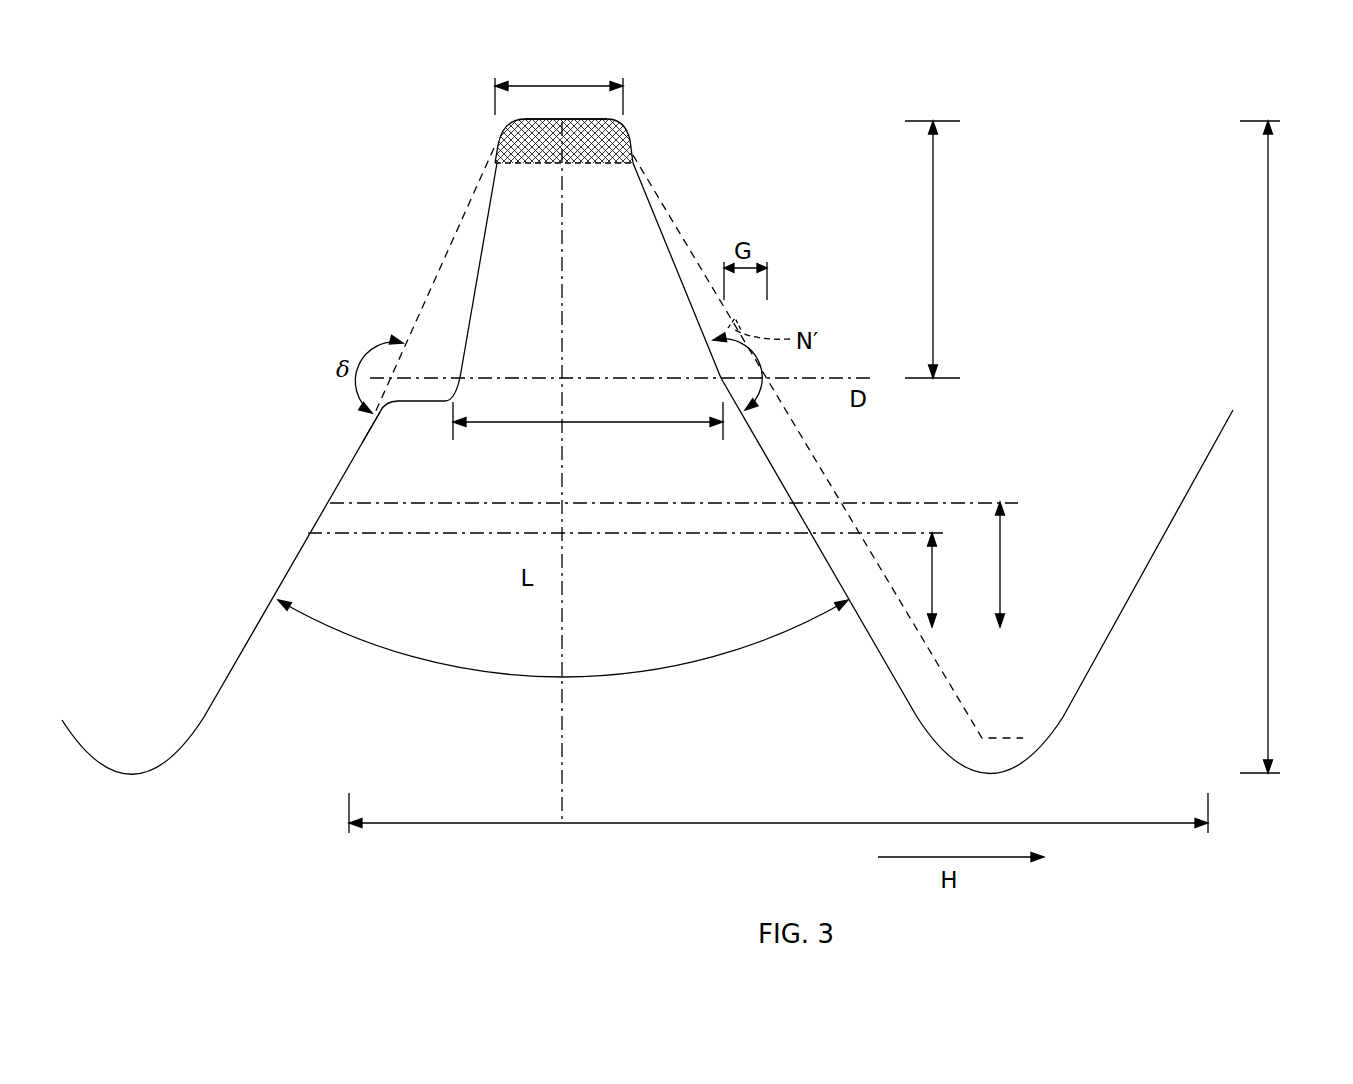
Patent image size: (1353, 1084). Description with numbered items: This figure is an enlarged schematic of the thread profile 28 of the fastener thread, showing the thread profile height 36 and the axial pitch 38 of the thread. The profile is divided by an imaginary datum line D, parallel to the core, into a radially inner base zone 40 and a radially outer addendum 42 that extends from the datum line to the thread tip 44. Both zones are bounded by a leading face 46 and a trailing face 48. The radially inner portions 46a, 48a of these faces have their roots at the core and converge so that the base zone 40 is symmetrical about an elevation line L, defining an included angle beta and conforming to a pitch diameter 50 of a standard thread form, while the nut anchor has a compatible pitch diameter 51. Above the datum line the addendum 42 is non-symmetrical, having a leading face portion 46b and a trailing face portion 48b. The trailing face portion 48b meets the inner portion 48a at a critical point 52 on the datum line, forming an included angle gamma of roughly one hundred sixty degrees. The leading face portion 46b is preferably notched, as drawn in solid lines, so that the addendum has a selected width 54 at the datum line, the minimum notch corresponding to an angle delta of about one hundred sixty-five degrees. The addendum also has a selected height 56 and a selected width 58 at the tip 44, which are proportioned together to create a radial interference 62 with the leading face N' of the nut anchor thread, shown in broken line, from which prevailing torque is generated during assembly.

The thread 28 is at (345, 434).
The thread profile height 36 is at (1271, 447).
The axial pitch 38 is at (778, 824).
The base zone 40 is at (609, 608).
The addendum 42 is at (574, 312).
The thread tip 44 is at (543, 162).
The leading face 46 is at (230, 670).
The radially inner leading face portion 46a is at (307, 537).
The leading face portion of addendum 46b is at (470, 288).
The trailing face 48 is at (900, 685).
The radially inner trailing face portion 48a is at (791, 496).
The trailing face portion of addendum 48b is at (650, 197).
The pitch diameter 50 is at (946, 580).
The compatible pitch diameter of nut anchor 51 is at (1014, 564).
The critical point 52 is at (721, 378).
The selected width of addendum at datum line 54 is at (588, 426).
The addendum height 56 is at (937, 249).
The tip width 58 is at (559, 84).
The interference 62 is at (613, 140).